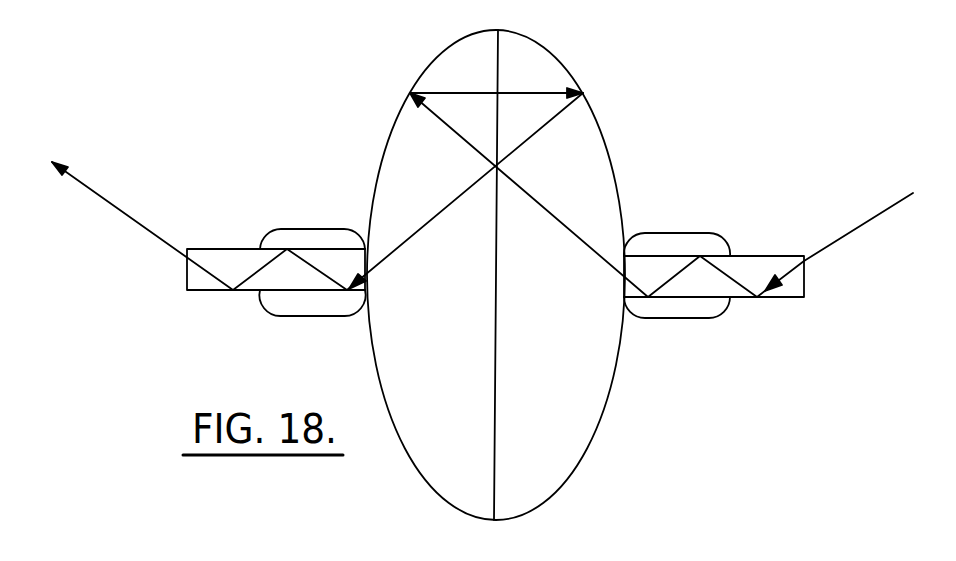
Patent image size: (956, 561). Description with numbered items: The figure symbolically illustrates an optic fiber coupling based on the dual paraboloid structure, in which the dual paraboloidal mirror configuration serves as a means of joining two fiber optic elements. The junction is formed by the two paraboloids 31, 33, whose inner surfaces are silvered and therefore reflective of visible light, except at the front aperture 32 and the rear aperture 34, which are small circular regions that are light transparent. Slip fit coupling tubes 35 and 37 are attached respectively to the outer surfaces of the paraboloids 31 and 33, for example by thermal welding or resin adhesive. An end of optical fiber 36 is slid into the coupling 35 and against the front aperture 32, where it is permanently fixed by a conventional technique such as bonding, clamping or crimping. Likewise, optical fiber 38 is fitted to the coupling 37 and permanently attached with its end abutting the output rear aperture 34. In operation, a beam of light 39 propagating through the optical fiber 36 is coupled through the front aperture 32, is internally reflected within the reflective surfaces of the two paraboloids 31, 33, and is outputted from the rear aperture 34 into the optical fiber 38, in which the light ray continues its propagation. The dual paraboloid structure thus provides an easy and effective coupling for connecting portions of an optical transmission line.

The paraboloid 31 is at (607, 142).
The front aperture 32 is at (620, 293).
The paraboloid 33 is at (386, 141).
The rear aperture 34 is at (370, 292).
The slip fit coupling tube 35 is at (668, 233).
The optical fiber 36 is at (772, 256).
The slip fit coupling tube 37 is at (288, 229).
The optical fiber 38 is at (210, 249).
The beam of light 39 is at (857, 230).